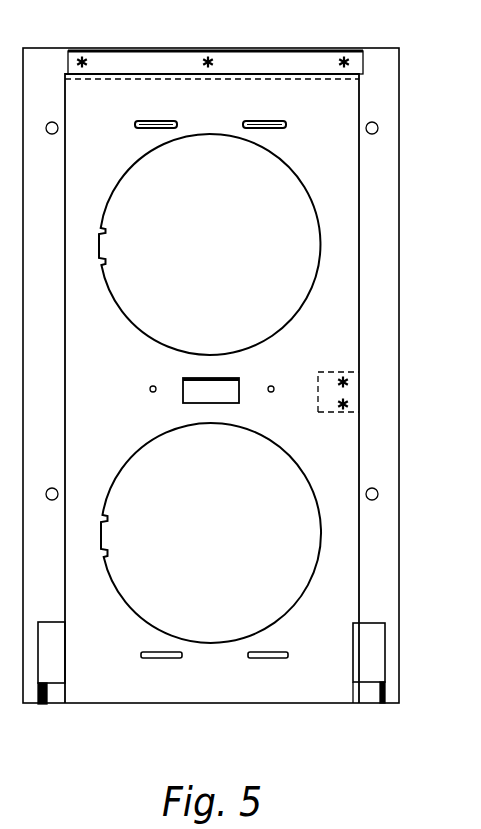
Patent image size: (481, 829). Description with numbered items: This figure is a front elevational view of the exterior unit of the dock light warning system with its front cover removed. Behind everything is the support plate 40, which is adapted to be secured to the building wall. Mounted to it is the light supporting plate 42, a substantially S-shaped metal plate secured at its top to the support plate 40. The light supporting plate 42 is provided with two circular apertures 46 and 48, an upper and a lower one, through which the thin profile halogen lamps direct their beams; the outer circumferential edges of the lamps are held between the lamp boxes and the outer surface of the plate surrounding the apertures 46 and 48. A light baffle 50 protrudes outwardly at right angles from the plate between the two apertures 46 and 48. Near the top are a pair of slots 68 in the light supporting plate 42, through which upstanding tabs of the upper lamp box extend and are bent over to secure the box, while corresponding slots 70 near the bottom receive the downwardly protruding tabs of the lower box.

The support plate 40 is at (384, 247).
The light supporting plate 42 is at (348, 457).
The circular aperture 46 is at (303, 185).
The circular aperture 48 is at (306, 478).
The light baffle 50 is at (196, 378).
The slots 68 is at (263, 121).
The lower mounting slots 70 is at (268, 660).